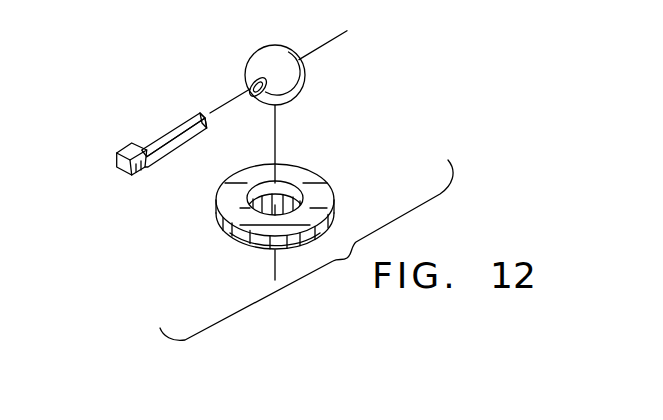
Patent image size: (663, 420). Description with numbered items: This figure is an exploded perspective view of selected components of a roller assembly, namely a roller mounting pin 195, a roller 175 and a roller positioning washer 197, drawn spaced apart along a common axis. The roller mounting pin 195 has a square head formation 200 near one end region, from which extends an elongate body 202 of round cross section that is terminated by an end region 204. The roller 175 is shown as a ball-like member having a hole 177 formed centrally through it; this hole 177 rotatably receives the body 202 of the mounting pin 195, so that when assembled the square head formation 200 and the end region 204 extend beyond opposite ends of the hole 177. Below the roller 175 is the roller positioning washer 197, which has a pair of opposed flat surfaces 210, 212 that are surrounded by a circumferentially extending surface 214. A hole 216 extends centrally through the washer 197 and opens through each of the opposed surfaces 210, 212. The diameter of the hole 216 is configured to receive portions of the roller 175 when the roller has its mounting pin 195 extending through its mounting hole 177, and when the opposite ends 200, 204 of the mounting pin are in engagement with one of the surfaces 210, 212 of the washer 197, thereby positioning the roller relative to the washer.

The roller 175 is at (275, 60).
The hole 177 is at (257, 92).
The roller mounting pin 195 is at (182, 146).
The roller positioning washer 197 is at (307, 189).
The square head formation 200 is at (140, 120).
The elongate body 202 is at (172, 124).
The end region 204 is at (207, 110).
The flat surface 210 is at (333, 178).
The flat surface 212 is at (336, 231).
The circumferentially extending surface 214 is at (247, 236).
The hole 216 is at (330, 163).